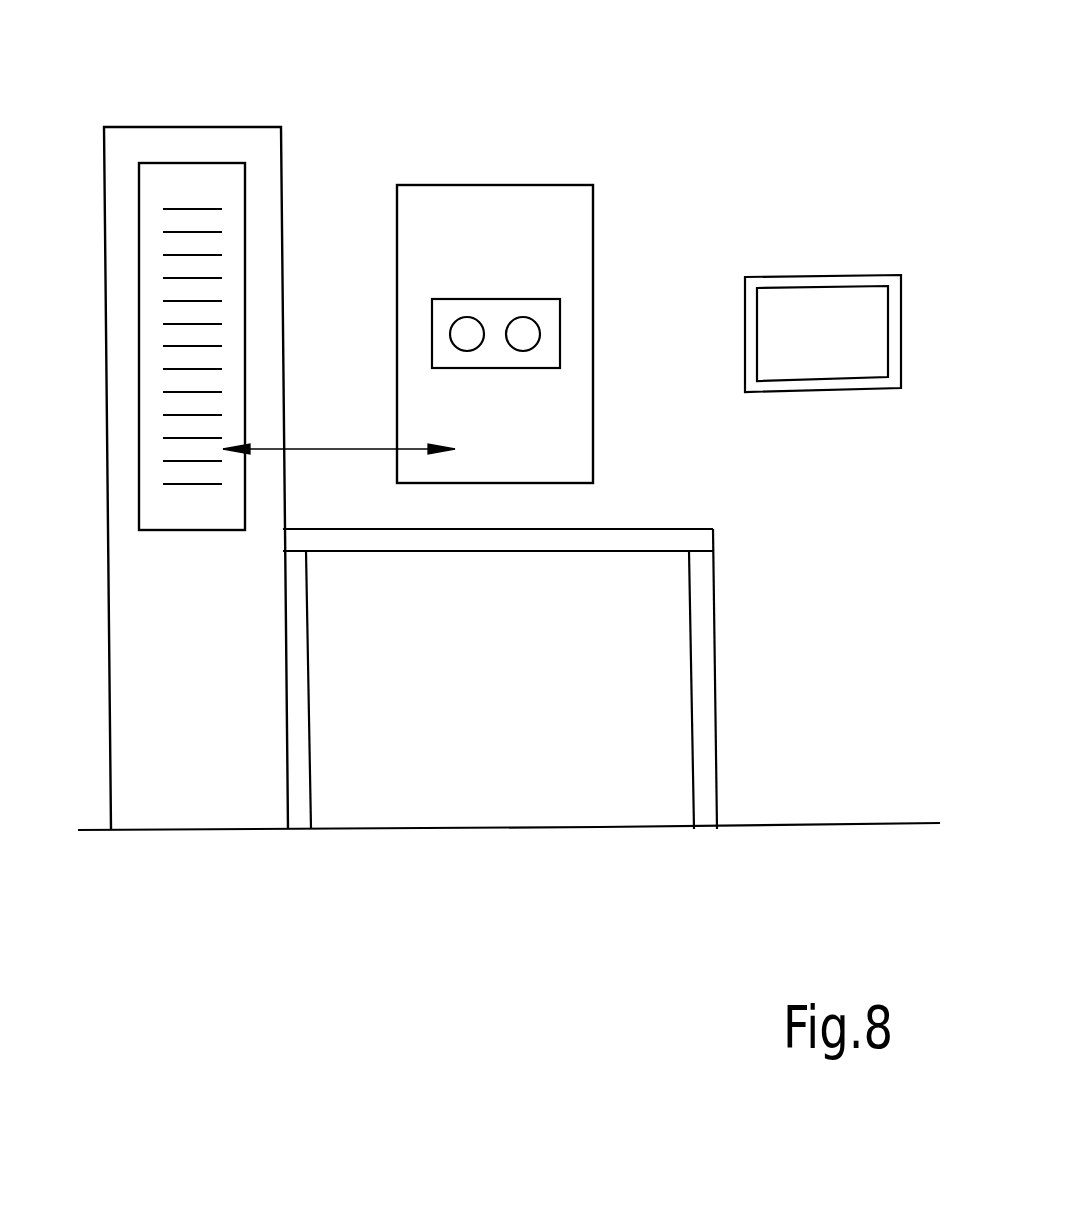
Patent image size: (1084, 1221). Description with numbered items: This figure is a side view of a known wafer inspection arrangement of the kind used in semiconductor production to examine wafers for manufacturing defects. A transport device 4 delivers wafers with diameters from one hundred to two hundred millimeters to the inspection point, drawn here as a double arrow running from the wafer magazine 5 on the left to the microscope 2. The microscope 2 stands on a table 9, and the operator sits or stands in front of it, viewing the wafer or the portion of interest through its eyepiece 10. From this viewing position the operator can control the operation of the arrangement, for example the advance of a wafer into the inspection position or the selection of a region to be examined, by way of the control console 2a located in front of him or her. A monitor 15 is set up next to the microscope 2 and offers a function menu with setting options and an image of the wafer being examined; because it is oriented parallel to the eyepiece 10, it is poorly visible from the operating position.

The microscope 2 is at (424, 200).
The control console 2a is at (446, 307).
The transport device 4 is at (330, 447).
The wafer magazine 5 is at (200, 178).
The table 9 is at (643, 529).
The eyepiece 10 is at (537, 333).
The monitor 15 is at (817, 286).